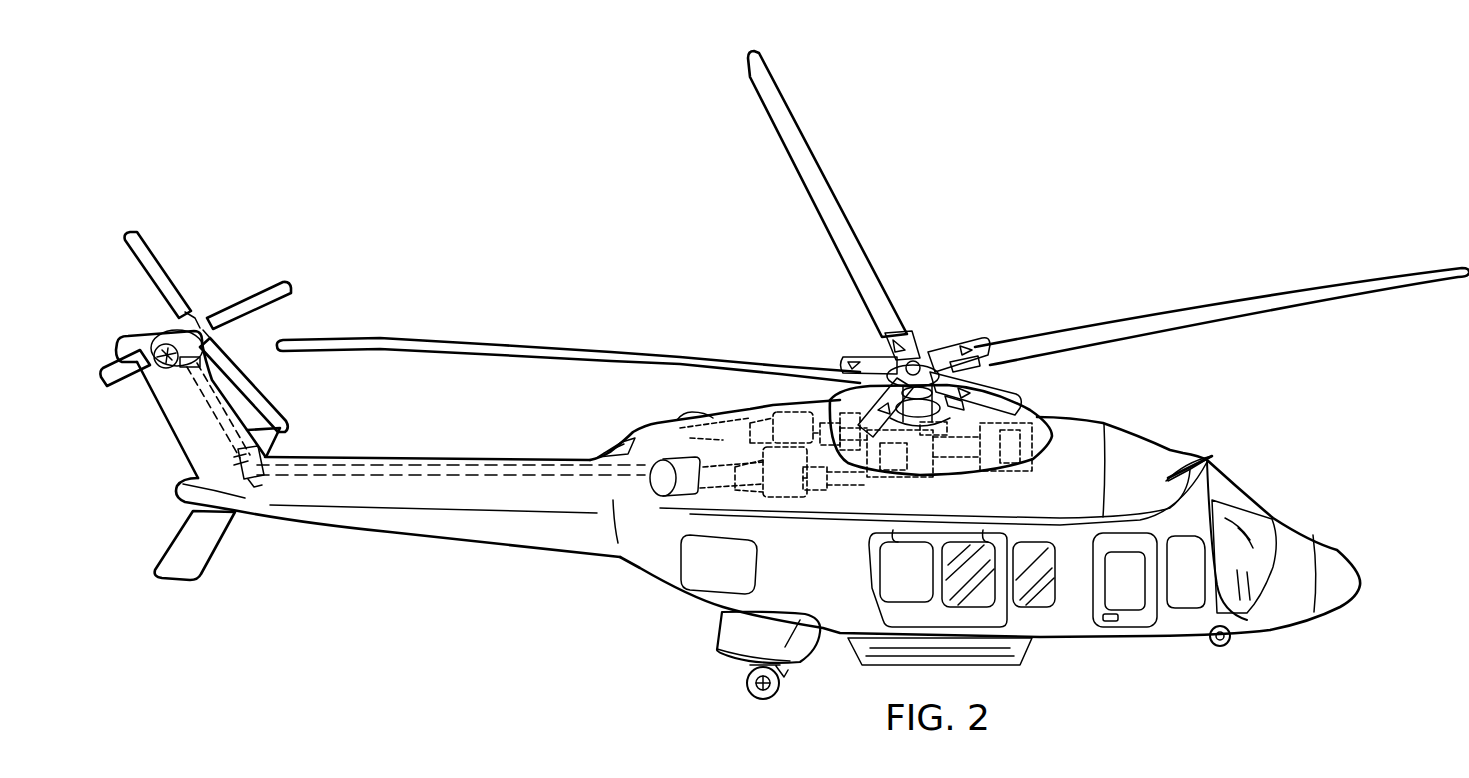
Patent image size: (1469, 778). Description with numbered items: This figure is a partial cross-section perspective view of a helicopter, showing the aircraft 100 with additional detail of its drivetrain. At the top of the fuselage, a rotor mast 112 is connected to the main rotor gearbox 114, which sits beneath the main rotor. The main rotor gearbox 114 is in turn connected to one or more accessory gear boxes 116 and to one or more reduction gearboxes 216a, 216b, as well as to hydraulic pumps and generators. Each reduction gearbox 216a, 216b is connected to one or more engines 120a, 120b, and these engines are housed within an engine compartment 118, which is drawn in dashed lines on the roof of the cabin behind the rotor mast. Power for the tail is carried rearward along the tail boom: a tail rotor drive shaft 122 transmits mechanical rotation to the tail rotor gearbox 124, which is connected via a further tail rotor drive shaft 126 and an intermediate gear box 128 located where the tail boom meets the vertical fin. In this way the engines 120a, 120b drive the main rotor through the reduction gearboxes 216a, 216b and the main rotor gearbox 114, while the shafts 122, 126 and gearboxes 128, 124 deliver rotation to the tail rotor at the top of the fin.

The aircraft 100 is at (1156, 100).
The rotor mast 112 is at (887, 483).
The main rotor gearbox 114 is at (927, 458).
The accessory gear box 116 is at (1000, 450).
The engine compartment 118 is at (805, 395).
The engine 120a is at (770, 483).
The engine 120b is at (778, 427).
The reduction gearbox 216a is at (827, 493).
The reduction gearbox 216b is at (827, 362).
The tail rotor drive shaft 122 is at (468, 468).
The tail rotor gearbox 124 is at (157, 327).
The tail rotor drive shaft 126 is at (233, 408).
The intermediate gear box 128 is at (247, 480).